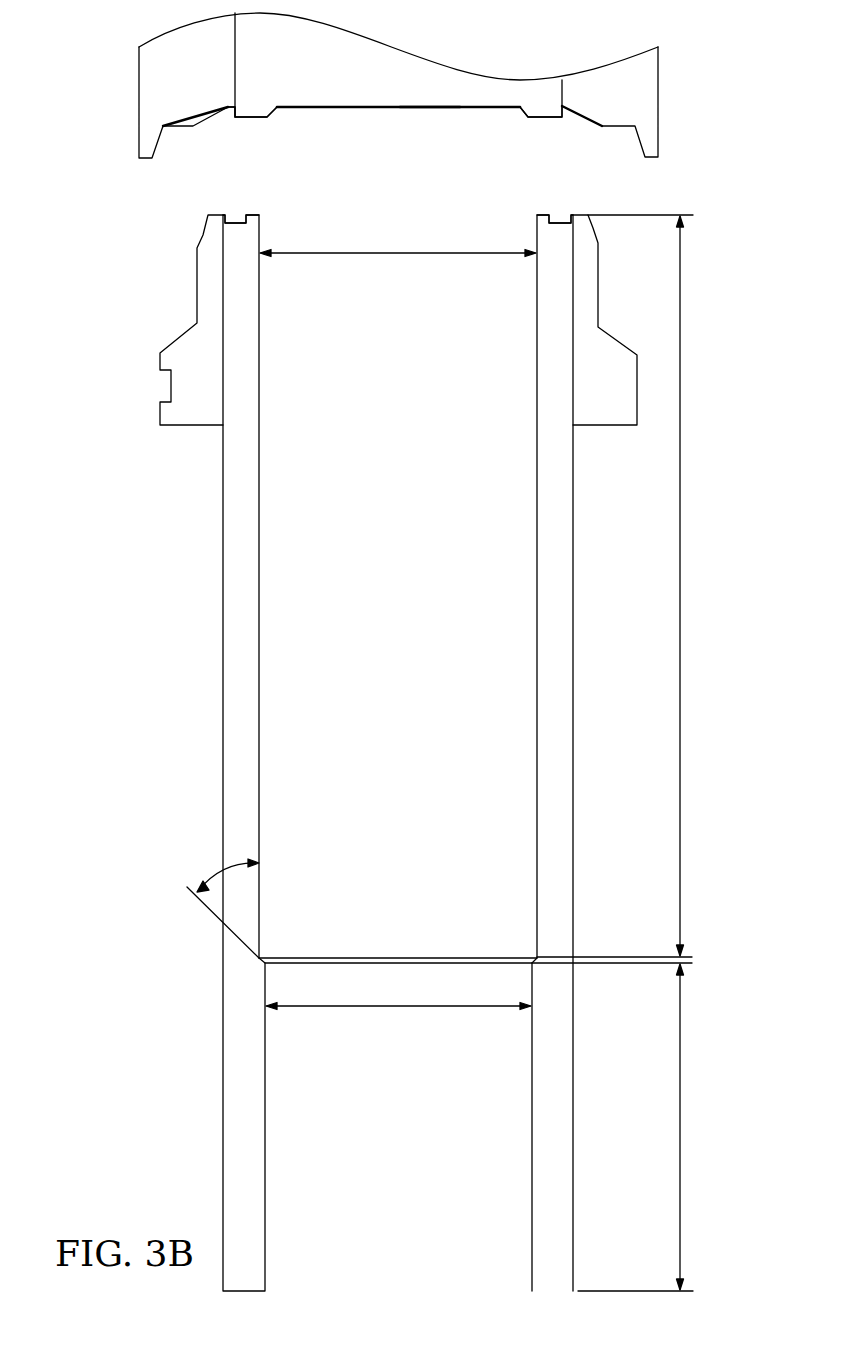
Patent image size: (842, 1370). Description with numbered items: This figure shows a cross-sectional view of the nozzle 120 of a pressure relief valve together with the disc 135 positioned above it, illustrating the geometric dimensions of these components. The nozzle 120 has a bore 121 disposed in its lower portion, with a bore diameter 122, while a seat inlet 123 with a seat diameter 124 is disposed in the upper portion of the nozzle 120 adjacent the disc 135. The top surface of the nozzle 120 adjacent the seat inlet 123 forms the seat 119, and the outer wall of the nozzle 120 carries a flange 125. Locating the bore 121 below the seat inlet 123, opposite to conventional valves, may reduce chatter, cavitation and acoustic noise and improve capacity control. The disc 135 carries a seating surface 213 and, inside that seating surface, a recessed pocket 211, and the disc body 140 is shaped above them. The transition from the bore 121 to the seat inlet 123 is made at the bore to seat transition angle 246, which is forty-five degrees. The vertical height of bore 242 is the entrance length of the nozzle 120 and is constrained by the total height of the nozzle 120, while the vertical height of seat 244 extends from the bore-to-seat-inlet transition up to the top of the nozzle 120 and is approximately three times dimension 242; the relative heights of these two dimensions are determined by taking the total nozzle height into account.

The upper die member 140 is at (139, 110).
The seating surface 213 is at (252, 118).
The seat 119 is at (253, 213).
The disc 135 is at (372, 108).
The pocket 211 is at (428, 114).
The seat diameter 124 is at (398, 252).
The flange 125 is at (190, 427).
The seat inlet 123 is at (378, 602).
The nozzle 120 is at (230, 648).
The bore to seat transition angle 246 is at (222, 878).
The vertical height of seat 244 is at (681, 585).
The vertical height of bore 242 is at (681, 1127).
The bore diameter 122 is at (396, 1008).
The bore 121 is at (378, 1143).